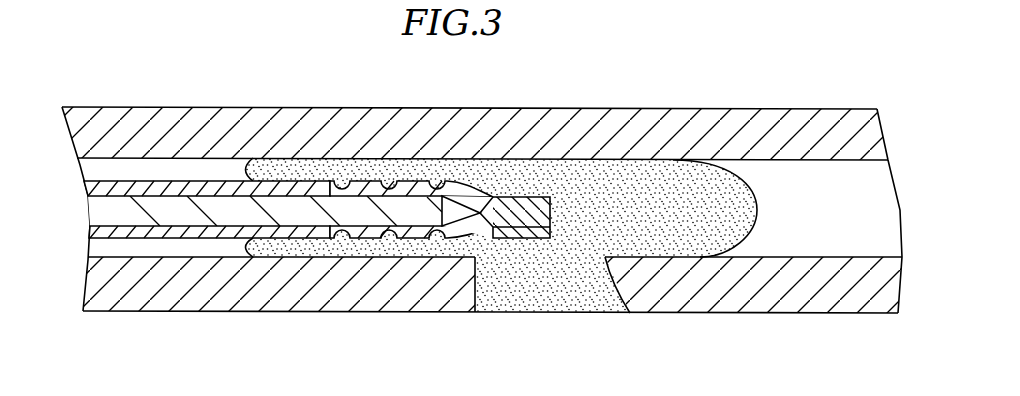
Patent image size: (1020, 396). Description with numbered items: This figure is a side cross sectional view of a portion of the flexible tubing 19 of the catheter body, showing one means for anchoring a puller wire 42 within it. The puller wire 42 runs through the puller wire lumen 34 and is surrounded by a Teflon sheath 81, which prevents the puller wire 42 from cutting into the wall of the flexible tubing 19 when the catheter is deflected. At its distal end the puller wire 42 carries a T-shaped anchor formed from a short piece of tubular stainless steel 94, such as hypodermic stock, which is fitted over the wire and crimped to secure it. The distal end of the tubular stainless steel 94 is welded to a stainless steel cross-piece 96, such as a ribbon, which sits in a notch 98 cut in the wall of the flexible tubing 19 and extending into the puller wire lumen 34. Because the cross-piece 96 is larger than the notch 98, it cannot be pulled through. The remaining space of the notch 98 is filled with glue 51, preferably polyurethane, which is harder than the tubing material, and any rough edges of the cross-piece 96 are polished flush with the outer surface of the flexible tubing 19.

The flexible tubing 19 is at (785, 313).
The puller wire lumen 34 is at (867, 187).
The puller wire 42 is at (118, 212).
The glue 51 is at (648, 177).
The Teflon sheath 81 is at (88, 192).
The tubular stainless steel 94 is at (358, 240).
The stainless steel cross-piece 96 is at (523, 240).
The notch 98 is at (477, 285).